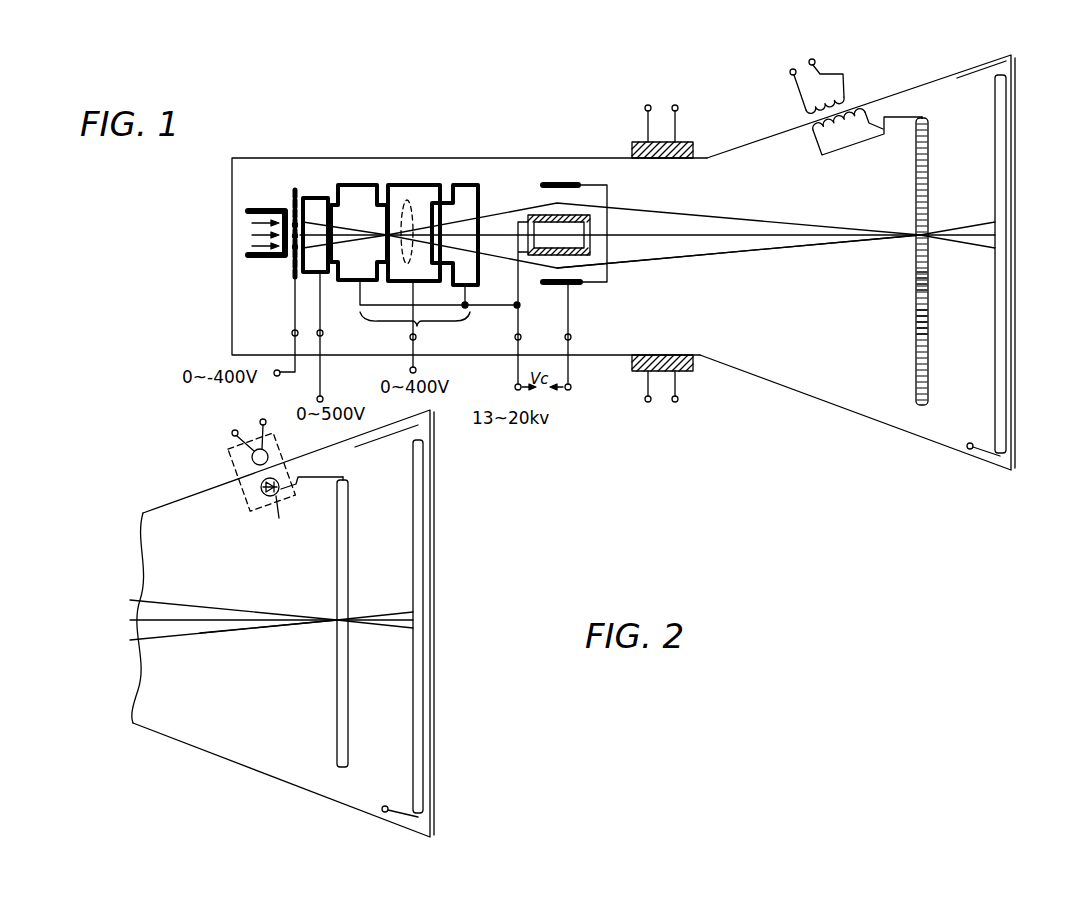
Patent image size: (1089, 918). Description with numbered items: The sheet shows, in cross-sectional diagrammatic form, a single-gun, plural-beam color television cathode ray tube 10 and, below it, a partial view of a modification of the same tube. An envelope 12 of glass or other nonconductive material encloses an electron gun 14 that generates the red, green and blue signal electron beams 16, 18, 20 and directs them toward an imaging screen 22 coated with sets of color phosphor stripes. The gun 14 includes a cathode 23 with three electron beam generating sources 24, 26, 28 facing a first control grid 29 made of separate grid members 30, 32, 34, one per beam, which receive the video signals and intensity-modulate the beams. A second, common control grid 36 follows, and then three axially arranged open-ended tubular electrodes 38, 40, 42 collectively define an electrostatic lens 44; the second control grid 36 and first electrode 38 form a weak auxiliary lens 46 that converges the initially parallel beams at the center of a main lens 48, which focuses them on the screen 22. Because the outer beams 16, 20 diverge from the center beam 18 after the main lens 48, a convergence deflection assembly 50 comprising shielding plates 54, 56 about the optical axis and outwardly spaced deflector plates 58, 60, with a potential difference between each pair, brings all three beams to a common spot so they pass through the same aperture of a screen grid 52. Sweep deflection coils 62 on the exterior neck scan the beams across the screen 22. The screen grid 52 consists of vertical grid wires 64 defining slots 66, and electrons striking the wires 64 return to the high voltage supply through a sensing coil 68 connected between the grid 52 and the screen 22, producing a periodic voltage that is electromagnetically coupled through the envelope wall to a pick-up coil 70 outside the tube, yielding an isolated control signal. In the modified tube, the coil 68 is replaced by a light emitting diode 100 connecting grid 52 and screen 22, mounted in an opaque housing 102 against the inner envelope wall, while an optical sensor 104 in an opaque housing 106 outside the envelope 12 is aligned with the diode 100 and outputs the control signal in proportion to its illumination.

In FIG. 1, the cathode ray tube 10 is at (425, 118).
In FIG. 1, the envelope 12 is at (540, 157).
In FIG. 2, the envelope 12 is at (184, 748).
In FIG. 1, the electron gun 14 is at (343, 261).
In FIG. 1, the electron beam 16 is at (704, 255).
In FIG. 2, the electron beam 16 is at (200, 638).
In FIG. 1, the electron beam 18 is at (763, 248).
In FIG. 2, the electron beam 18 is at (243, 622).
In FIG. 1, the electron beam 20 is at (790, 226).
In FIG. 2, the electron beam 20 is at (278, 614).
In FIG. 1, the imaging screen 22 is at (999, 368).
In FIG. 2, the imaging screen 22 is at (418, 657).
In FIG. 1, the cathode 23 is at (244, 210).
In FIG. 1, the electron beam generating source 24 is at (257, 224).
In FIG. 1, the electron beam generating source 26 is at (257, 236).
In FIG. 1, the electron beam generating source 28 is at (257, 247).
In FIG. 1, the first control grid 29 is at (297, 188).
In FIG. 1, the grid member 30 is at (294, 198).
In FIG. 1, the grid member 32 is at (292, 252).
In FIG. 1, the grid member 34 is at (291, 278).
In FIG. 1, the second control grid 36 is at (313, 196).
In FIG. 1, the electrode 38 is at (363, 183).
In FIG. 1, the electrode 40 is at (434, 185).
In FIG. 1, the electrode 42 is at (470, 186).
In FIG. 1, the electrostatic lens 44 is at (414, 333).
In FIG. 1, the auxiliary lens 46 is at (345, 249).
In FIG. 1, the main lens 48 is at (408, 206).
In FIG. 1, the convergence deflection assembly 50 is at (571, 180).
In FIG. 1, the screen grid 52 is at (910, 364).
In FIG. 2, the screen grid 52 is at (320, 722).
In FIG. 1, the shielding plate 54 is at (586, 216).
In FIG. 1, the shielding plate 56 is at (589, 253).
In FIG. 1, the deflector plate 58 is at (579, 183).
In FIG. 1, the deflector plate 60 is at (575, 287).
In FIG. 1, the deflection coil 62 is at (692, 149).
In FIG. 1, the grid wire 64 is at (915, 294).
In FIG. 1, the slot 66 is at (915, 337).
In FIG. 1, the sensing coil 68 is at (814, 132).
In FIG. 1, the pick-up coil 70 is at (850, 97).
In FIG. 2, the light emitting diode 100 is at (309, 502).
In FIG. 2, the housing 102 is at (249, 499).
In FIG. 2, the optical sensor 104 is at (269, 450).
In FIG. 2, the housing 106 is at (234, 465).